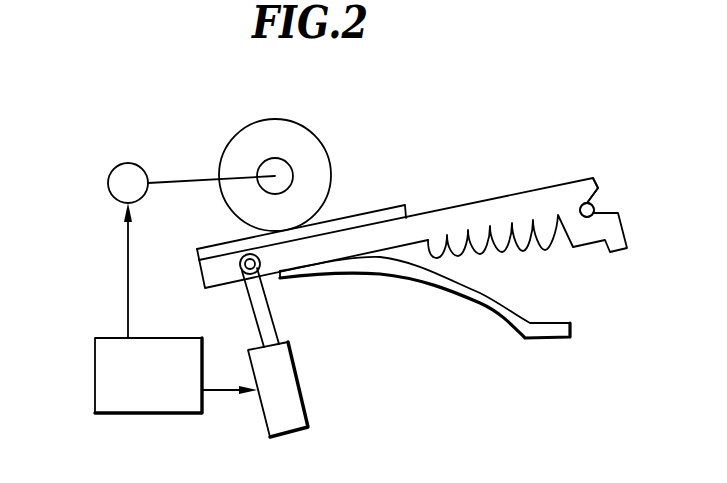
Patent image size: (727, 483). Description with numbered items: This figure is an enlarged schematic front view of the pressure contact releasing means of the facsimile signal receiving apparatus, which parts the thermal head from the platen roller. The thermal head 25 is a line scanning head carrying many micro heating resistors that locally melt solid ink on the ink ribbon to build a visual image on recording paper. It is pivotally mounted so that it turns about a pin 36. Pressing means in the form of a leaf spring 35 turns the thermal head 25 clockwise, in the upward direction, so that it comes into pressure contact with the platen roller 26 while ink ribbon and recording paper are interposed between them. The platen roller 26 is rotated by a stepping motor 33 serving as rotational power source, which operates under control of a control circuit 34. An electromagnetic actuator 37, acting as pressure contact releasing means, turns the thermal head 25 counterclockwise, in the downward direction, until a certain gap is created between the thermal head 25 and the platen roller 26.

The thermal head 25 is at (374, 225).
The platen roller 26 is at (308, 132).
The stepping motor 33 is at (132, 163).
The control circuit 34 is at (137, 413).
The leaf spring 35 is at (414, 283).
The pin 36 is at (585, 208).
The electromagnetic actuator 37 is at (307, 407).